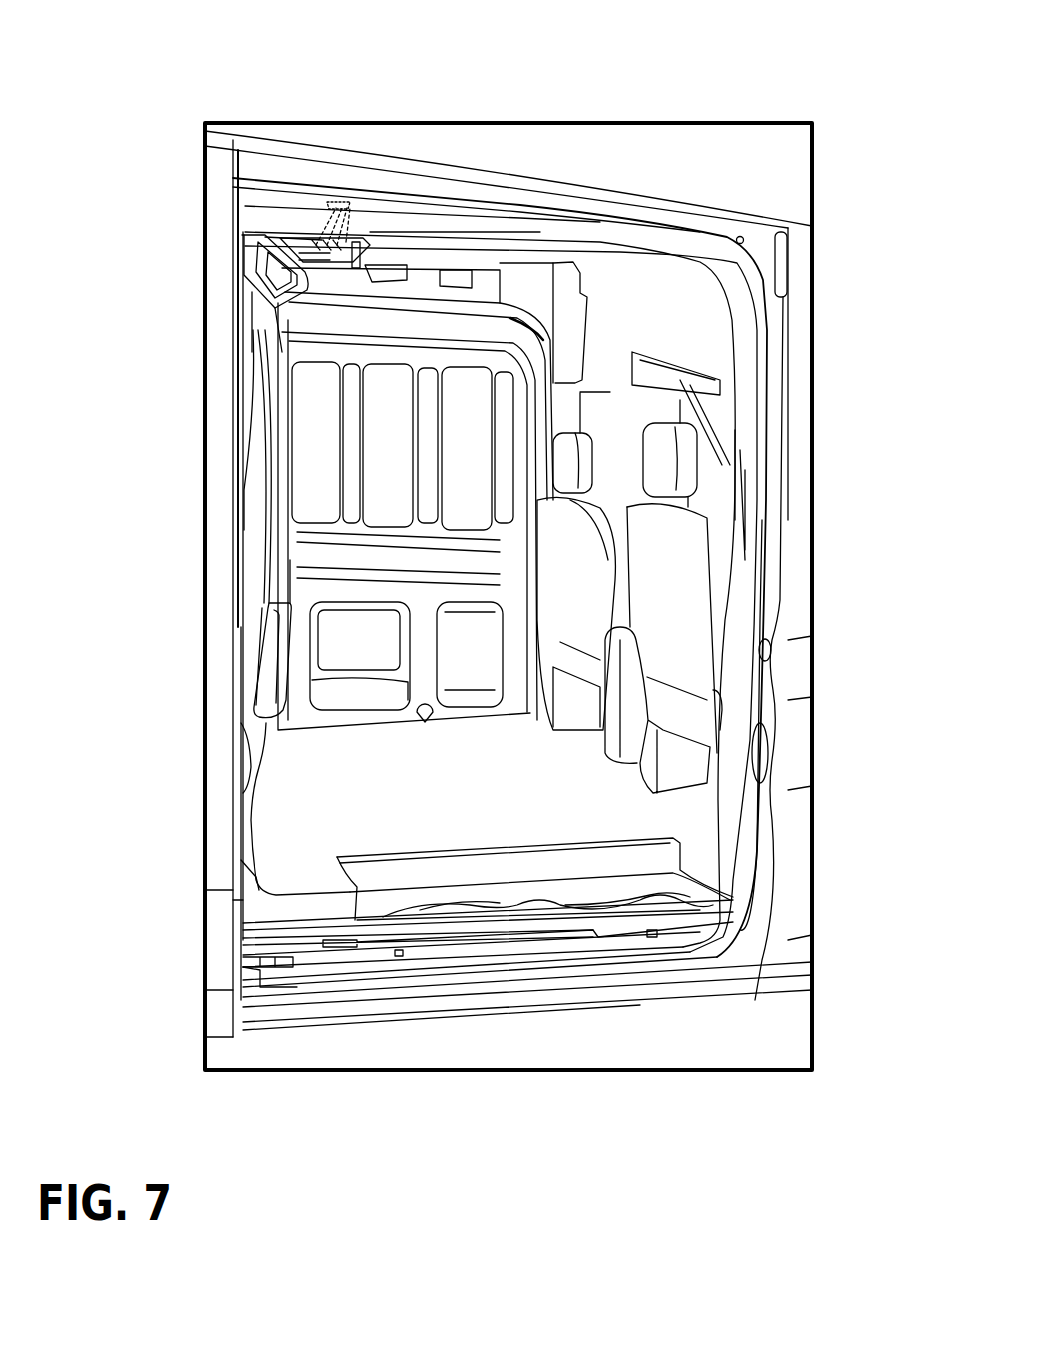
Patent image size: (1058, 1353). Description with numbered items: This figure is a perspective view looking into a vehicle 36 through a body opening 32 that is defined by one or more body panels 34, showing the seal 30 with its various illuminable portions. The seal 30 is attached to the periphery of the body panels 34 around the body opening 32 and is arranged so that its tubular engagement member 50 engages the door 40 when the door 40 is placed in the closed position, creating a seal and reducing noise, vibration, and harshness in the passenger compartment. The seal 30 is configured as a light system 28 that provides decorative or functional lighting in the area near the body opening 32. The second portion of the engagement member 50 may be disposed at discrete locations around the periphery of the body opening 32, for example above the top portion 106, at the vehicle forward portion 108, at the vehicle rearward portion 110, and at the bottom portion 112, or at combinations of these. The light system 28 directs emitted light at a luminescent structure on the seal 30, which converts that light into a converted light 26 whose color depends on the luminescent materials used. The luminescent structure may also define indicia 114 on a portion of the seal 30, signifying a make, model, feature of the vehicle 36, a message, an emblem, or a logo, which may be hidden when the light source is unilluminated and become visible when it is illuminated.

The converted light 26 is at (303, 232).
The light system 28 is at (443, 178).
The seal 30 is at (383, 255).
The top portion 106 is at (493, 188).
The engagement member 50 is at (580, 185).
The vehicle 36 is at (733, 197).
The indicia 114 is at (323, 207).
The vehicle rearward portion 110 is at (232, 642).
The door 40 is at (220, 800).
The body opening 32 is at (360, 800).
The bottom portion 112 is at (687, 997).
The body panel 34 is at (730, 950).
The vehicle forward portion 108 is at (757, 793).